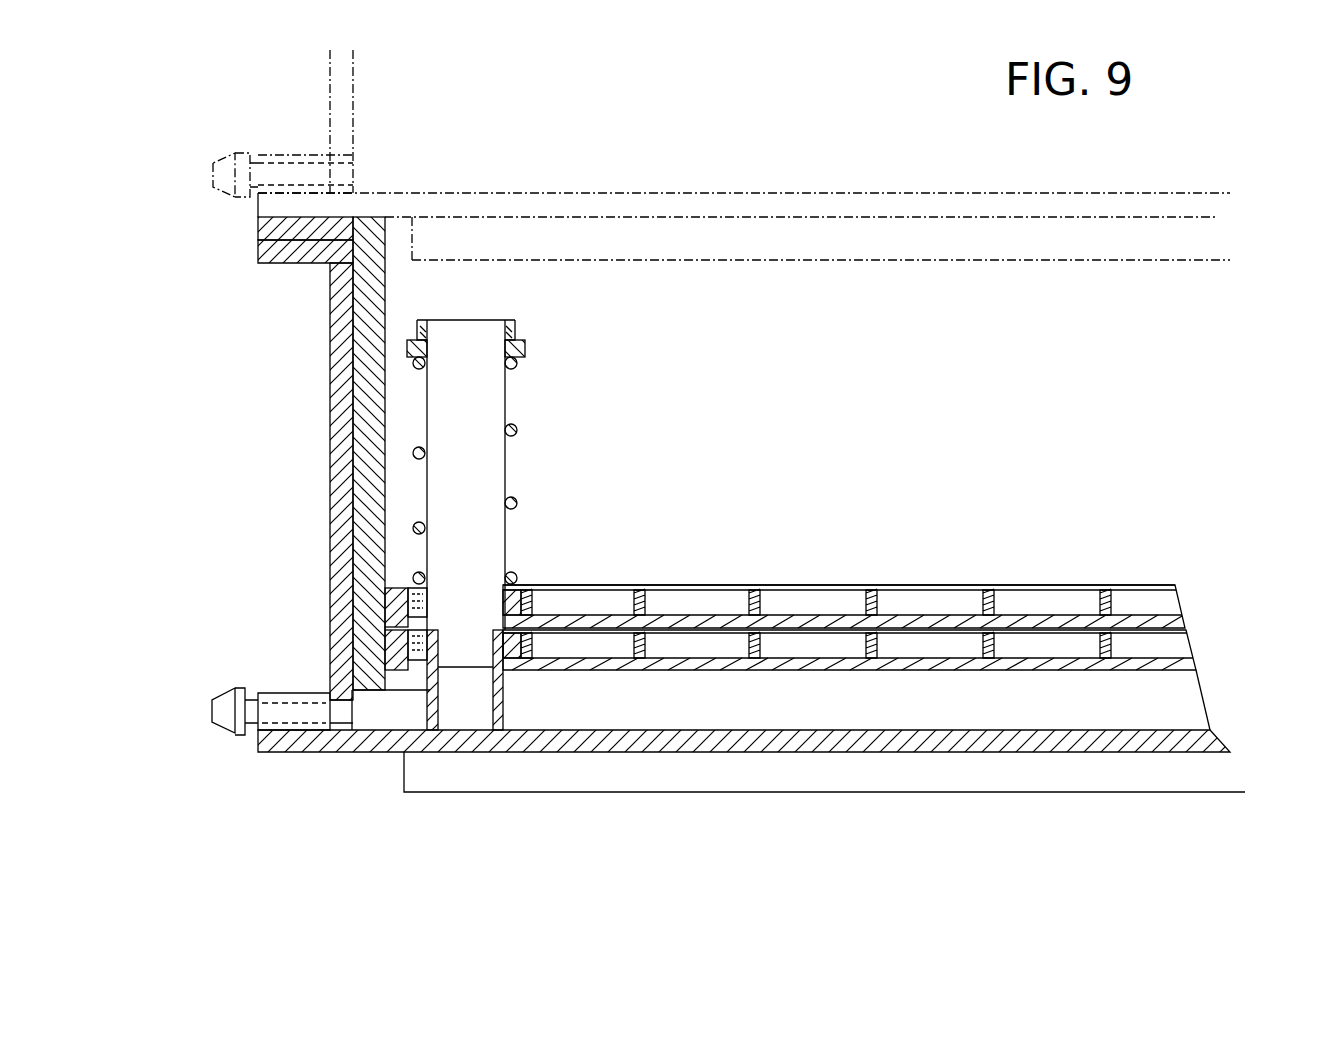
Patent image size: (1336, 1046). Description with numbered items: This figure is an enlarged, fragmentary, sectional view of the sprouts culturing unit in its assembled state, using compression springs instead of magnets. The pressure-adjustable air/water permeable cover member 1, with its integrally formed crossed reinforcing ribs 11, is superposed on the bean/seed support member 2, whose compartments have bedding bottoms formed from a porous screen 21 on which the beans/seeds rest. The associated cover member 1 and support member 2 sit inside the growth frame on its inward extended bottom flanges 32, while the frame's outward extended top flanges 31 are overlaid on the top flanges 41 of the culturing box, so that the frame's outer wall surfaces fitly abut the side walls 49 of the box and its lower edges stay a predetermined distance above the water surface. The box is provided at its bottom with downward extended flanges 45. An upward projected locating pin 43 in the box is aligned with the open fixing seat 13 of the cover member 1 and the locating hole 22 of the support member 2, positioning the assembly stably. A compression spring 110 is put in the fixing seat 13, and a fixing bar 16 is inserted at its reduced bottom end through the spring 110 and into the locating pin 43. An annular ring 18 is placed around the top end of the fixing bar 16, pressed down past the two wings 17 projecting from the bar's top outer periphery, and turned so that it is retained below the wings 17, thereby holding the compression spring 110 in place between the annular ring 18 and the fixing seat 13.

The pressure-adjustable air/water permeable cover member 1 is at (902, 584).
The bean/seed support member 2 is at (919, 681).
The crossed reinforcing ribs 11 is at (1110, 588).
The open fixing seats 13 is at (540, 585).
The fixing bar 16 is at (485, 467).
The wings 17 is at (515, 323).
The annular ring 18 is at (525, 348).
The compression spring 110 is at (520, 495).
The porous screen 21 is at (1165, 645).
The locating holes 22 is at (398, 690).
The outward extended top flanges 31 is at (260, 232).
The inward extended bottom flanges 32 is at (340, 752).
The top flanges 41 is at (260, 258).
The locating pins 43 is at (424, 680).
The downward extended flanges 45 is at (784, 793).
The side walls 49 is at (345, 400).